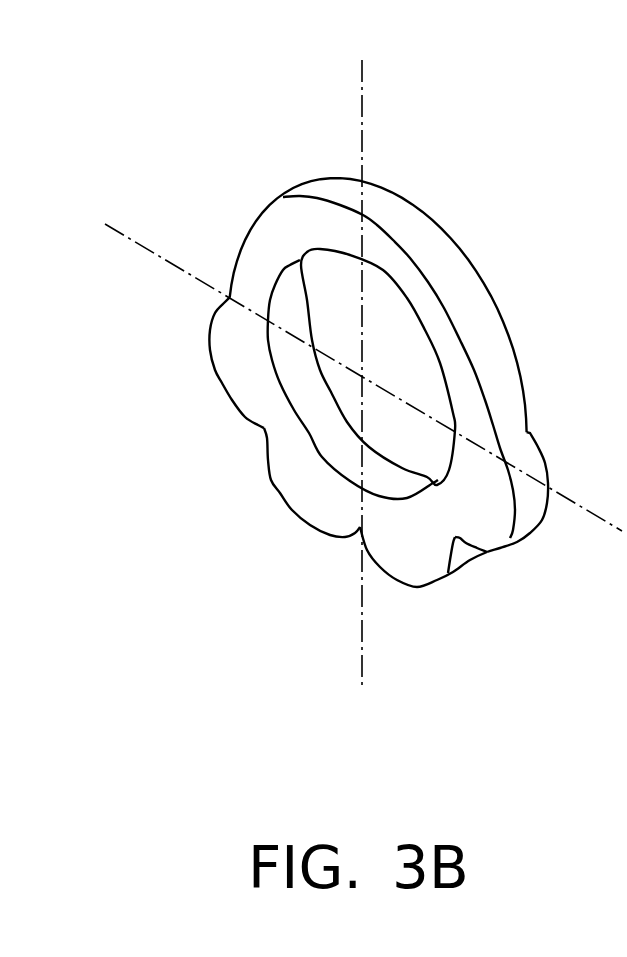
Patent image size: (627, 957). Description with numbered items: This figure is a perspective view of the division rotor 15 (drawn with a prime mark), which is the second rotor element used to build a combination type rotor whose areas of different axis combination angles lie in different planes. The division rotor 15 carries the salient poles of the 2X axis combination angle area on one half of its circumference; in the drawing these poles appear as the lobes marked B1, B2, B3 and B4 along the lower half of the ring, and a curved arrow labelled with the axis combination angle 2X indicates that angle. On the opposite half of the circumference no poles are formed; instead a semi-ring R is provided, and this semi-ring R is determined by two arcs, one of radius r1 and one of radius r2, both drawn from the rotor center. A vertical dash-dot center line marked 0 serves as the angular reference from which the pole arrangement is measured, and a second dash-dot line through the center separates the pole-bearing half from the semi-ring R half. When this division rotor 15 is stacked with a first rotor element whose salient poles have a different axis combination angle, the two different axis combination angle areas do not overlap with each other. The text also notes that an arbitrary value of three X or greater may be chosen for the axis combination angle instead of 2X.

The division rotor 15 is at (363, 378).
The zero degree reference line 0 is at (363, 180).
The semi-ring R is at (247, 230).
The radius r1 is at (432, 306).
The radius r2 is at (360, 375).
The first lobe B1 is at (220, 382).
The second lobe B2 is at (280, 492).
The third lobe B3 is at (449, 574).
The fourth lobe B4 is at (514, 539).
The axis combination angle 2X is at (420, 645).